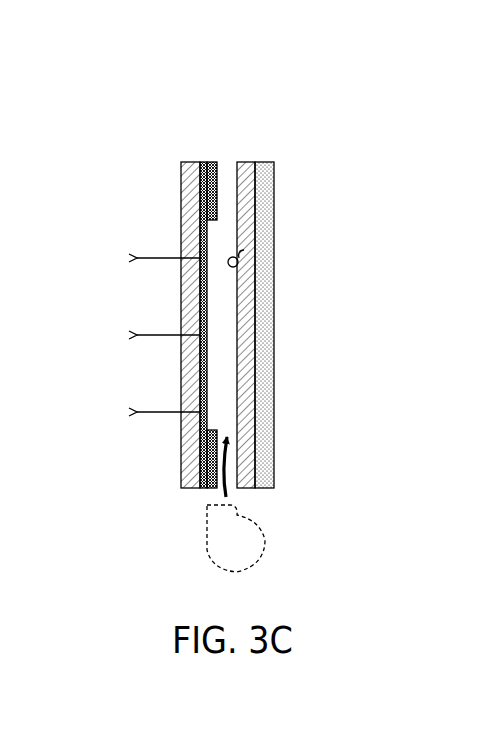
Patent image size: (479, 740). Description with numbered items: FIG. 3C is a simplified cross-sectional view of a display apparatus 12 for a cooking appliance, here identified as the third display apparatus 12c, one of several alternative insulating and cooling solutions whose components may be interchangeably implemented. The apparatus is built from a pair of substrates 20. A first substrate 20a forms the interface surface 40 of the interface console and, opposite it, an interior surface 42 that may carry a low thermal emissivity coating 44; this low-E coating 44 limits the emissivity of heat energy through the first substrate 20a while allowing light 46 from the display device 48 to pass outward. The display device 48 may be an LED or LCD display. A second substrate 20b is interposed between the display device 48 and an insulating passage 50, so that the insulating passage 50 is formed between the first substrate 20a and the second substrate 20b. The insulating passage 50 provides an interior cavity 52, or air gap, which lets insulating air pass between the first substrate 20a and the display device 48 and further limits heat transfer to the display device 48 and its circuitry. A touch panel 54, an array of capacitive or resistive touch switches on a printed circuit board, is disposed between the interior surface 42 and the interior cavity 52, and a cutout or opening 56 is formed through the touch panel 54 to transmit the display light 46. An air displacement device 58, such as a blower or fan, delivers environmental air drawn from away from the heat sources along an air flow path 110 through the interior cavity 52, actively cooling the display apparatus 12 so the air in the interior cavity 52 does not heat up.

The display apparatus 12 is at (251, 308).
The third display apparatus 12c is at (251, 308).
The substrate 20 is at (156, 282).
The first substrate 20a is at (156, 282).
The second substrate 20b is at (250, 161).
The interface surface 40 is at (181, 190).
The interior surface 42 is at (200, 228).
The low thermal emissivity (low-E) coating 44 is at (205, 161).
The light 46 is at (130, 300).
The display device 48 is at (265, 161).
The insulating passage 50 is at (244, 250).
The interior cavity 52 is at (229, 150).
The touch panel 54 is at (200, 473).
The opening 56 is at (216, 418).
The air displacement device 58 is at (258, 548).
The air flow path 110 is at (238, 480).